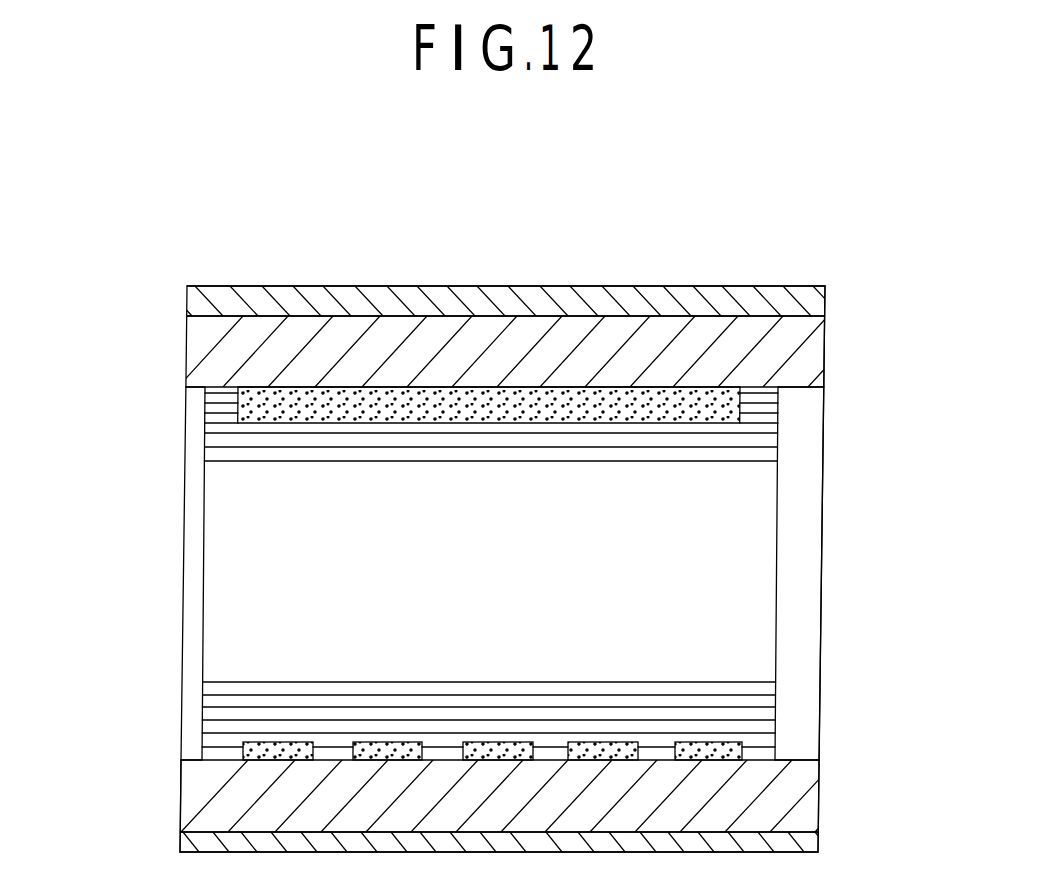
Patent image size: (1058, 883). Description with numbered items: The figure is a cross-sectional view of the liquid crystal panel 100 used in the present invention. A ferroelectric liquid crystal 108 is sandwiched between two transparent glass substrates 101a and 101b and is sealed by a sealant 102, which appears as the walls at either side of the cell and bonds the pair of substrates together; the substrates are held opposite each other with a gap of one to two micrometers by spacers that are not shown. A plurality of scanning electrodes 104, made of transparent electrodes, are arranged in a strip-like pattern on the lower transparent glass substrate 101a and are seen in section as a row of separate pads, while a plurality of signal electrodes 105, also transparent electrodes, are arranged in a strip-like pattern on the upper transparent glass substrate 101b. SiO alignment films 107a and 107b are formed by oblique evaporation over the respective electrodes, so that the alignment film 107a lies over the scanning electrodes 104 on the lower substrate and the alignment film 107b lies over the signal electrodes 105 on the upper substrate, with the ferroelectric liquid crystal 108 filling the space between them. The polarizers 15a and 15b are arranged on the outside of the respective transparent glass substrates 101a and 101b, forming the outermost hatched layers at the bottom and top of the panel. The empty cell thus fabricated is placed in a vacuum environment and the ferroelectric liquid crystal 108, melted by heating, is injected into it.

The liquid crystal panel 100 is at (762, 260).
The polarizer 15b is at (822, 298).
The transparent glass substrate 101b is at (810, 363).
The SiO alignment film 107b is at (760, 420).
The signal electrodes 105 is at (238, 425).
The sealant 102 is at (193, 545).
The ferroelectric liquid crystal 108 is at (505, 590).
The SiO alignment film 107a is at (755, 716).
The scanning electrodes 104 is at (243, 750).
The transparent glass substrate 101a is at (192, 800).
The polarizer 15a is at (814, 848).